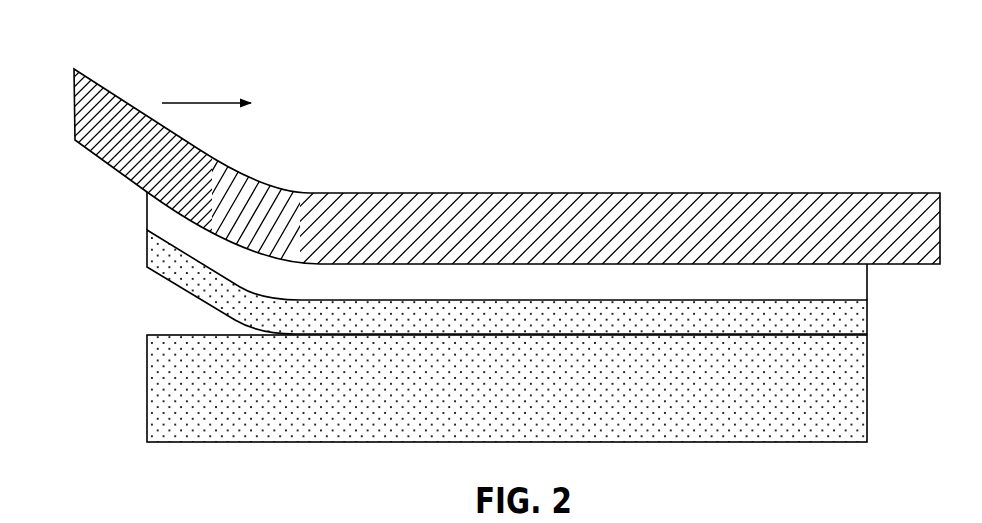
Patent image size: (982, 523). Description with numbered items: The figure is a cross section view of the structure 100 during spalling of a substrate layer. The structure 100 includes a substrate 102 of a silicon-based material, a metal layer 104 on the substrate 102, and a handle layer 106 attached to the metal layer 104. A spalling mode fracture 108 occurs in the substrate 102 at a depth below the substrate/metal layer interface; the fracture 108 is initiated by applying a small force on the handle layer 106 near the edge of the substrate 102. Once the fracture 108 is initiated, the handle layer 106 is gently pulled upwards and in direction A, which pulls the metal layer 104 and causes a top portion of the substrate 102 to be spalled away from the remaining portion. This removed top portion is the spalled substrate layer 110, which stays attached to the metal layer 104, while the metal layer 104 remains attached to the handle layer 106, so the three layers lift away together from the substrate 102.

The structure 100 is at (166, 39).
The substrate 102 is at (846, 425).
The metal layer 104 is at (853, 294).
The handle layer 106 is at (913, 245).
The spalling mode fracture 108 is at (141, 325).
The spalled substrate layer 110 is at (853, 329).